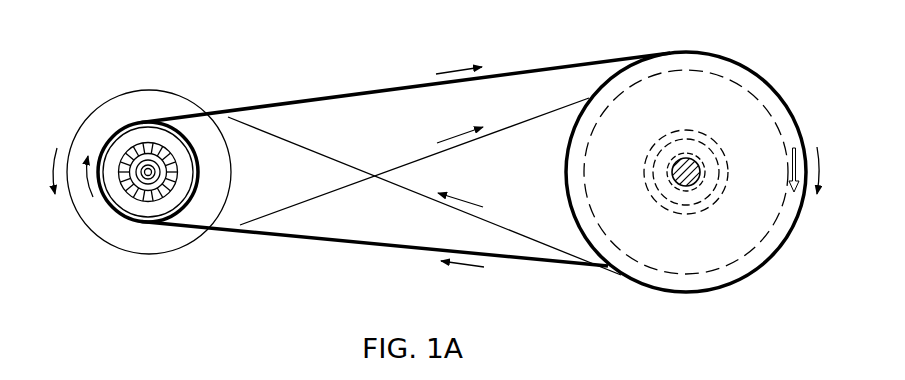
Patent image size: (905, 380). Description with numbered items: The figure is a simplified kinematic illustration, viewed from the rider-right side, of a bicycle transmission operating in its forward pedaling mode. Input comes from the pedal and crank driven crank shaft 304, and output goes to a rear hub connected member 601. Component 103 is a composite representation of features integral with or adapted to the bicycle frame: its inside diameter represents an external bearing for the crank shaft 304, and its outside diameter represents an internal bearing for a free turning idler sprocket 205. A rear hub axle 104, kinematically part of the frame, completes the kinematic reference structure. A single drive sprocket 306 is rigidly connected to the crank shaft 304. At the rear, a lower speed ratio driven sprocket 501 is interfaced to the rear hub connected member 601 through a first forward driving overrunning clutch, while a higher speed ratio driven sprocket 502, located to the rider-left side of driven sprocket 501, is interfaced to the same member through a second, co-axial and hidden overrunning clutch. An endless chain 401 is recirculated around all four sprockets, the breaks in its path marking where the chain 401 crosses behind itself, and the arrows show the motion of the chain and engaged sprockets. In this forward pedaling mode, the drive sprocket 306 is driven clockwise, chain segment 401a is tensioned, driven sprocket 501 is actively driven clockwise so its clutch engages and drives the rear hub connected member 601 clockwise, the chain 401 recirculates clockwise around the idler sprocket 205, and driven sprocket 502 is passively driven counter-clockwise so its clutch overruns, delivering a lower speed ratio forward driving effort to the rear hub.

The composite frame component 103 is at (703, 148).
The rear hub axle 104 is at (141, 180).
The idler sprocket 205 is at (735, 121).
The crank shaft 304 is at (700, 182).
The drive sprocket 306 is at (744, 266).
The endless chain 401 is at (345, 243).
The chain segment 401a is at (350, 95).
The driven sprocket 501 is at (128, 208).
The driven sprocket 502 is at (143, 236).
The rear hub connected member 601 is at (133, 146).